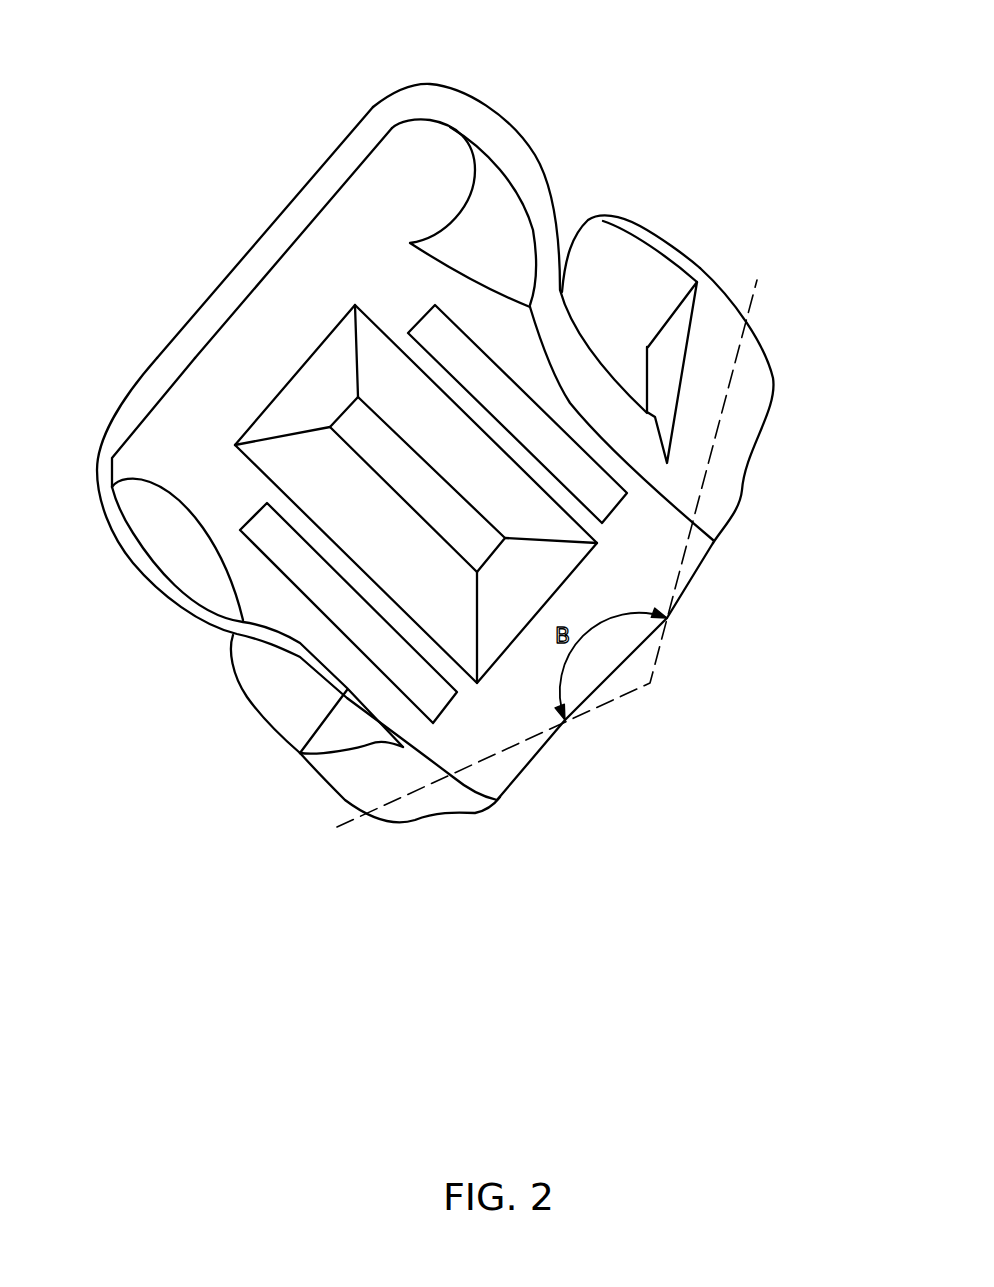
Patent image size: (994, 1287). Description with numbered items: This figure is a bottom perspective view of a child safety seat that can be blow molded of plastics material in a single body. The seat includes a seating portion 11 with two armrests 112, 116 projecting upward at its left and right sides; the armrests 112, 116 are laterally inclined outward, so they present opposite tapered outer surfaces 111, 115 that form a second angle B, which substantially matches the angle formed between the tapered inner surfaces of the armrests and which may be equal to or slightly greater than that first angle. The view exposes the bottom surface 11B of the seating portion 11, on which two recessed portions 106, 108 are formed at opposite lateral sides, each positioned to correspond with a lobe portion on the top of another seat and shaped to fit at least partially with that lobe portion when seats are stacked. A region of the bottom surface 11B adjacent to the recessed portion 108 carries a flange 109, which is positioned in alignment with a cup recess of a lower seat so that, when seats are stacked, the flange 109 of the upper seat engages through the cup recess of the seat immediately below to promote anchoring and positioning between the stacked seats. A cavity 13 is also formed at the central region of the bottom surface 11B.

The seating portion 11 is at (365, 93).
The bottom surface 11B is at (250, 323).
The cavity 13 is at (318, 383).
The recessed portion 106 is at (167, 560).
The recessed portion 108 is at (472, 237).
The flange 109 is at (473, 160).
The tapered outer surface 111 is at (353, 780).
The armrest 112 is at (243, 713).
The tapered outer surface 115 is at (737, 437).
The armrest 116 is at (706, 262).